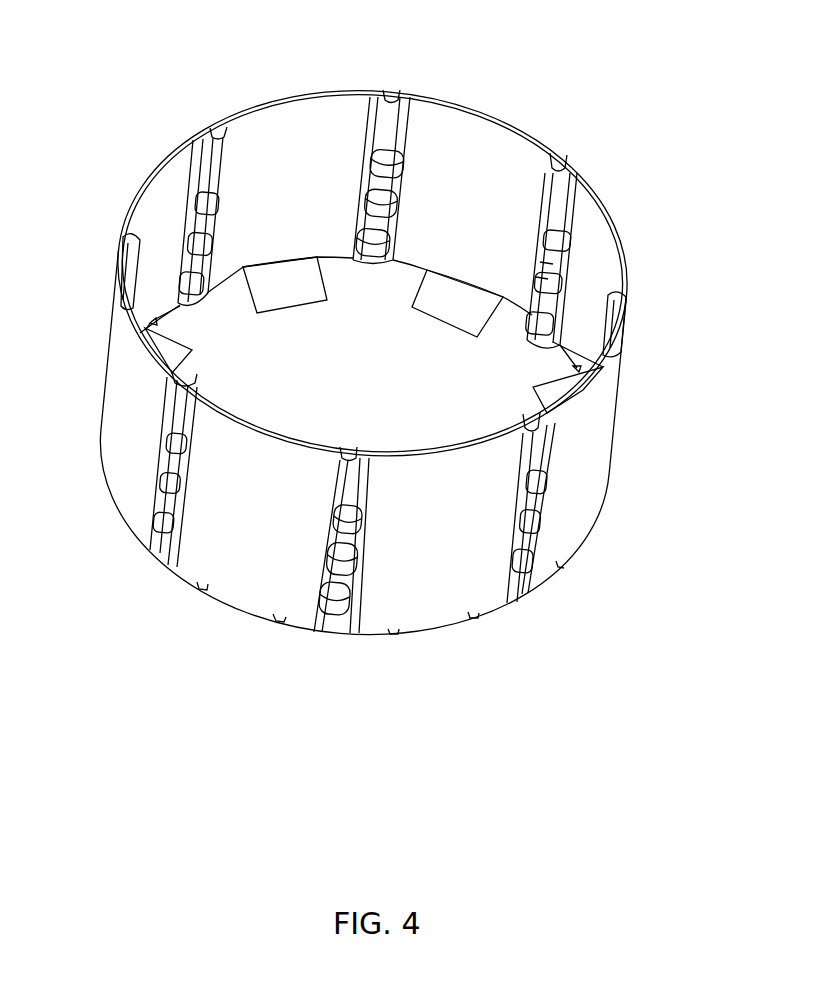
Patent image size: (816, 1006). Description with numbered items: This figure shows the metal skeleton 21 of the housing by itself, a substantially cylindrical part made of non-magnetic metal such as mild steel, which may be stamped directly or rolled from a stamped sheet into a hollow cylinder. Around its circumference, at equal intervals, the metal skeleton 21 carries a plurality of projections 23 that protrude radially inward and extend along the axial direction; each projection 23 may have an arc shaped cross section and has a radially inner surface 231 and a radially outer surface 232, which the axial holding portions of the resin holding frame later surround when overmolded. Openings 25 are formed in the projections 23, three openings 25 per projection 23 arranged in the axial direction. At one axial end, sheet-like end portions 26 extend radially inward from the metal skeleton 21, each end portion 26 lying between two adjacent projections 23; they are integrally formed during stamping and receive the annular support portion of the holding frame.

The metal skeleton 21 is at (494, 80).
The projection 23 is at (582, 155).
The opening 25 is at (563, 237).
The radially inner surface 231 is at (548, 264).
The radially outer surface 232 is at (540, 277).
The end portion 26 is at (273, 293).